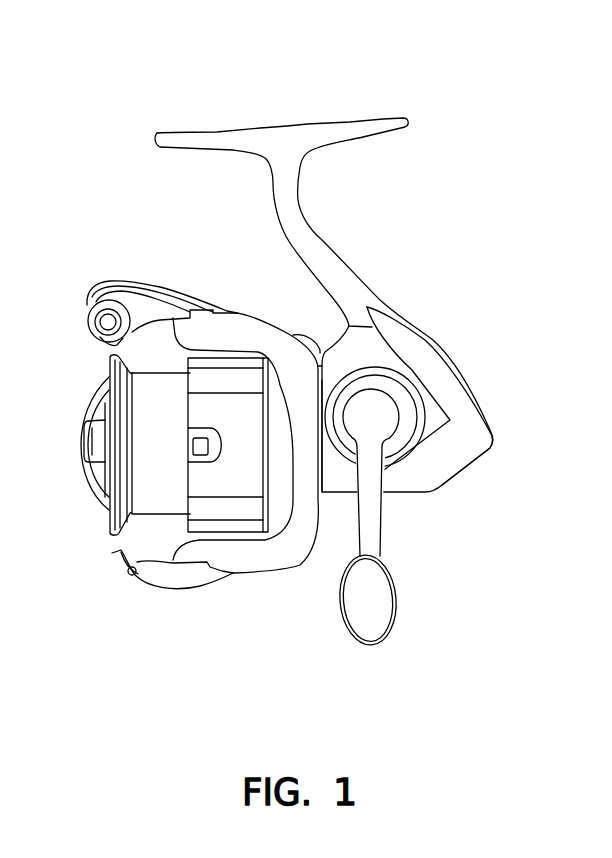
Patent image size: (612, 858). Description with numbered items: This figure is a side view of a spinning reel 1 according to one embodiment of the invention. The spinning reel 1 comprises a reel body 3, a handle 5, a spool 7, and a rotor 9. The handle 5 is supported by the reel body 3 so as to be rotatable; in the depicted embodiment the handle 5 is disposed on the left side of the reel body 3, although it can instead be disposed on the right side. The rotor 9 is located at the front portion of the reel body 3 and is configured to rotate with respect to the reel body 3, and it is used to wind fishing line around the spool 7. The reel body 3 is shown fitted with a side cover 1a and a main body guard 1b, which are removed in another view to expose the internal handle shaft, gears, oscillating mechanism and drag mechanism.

The spinning reel 1 is at (296, 349).
The side cover 1a is at (342, 478).
The main body guard 1b is at (455, 458).
The reel body 3 is at (410, 299).
The handle 5 is at (386, 508).
The spool 7 is at (160, 358).
The rotor 9 is at (148, 595).